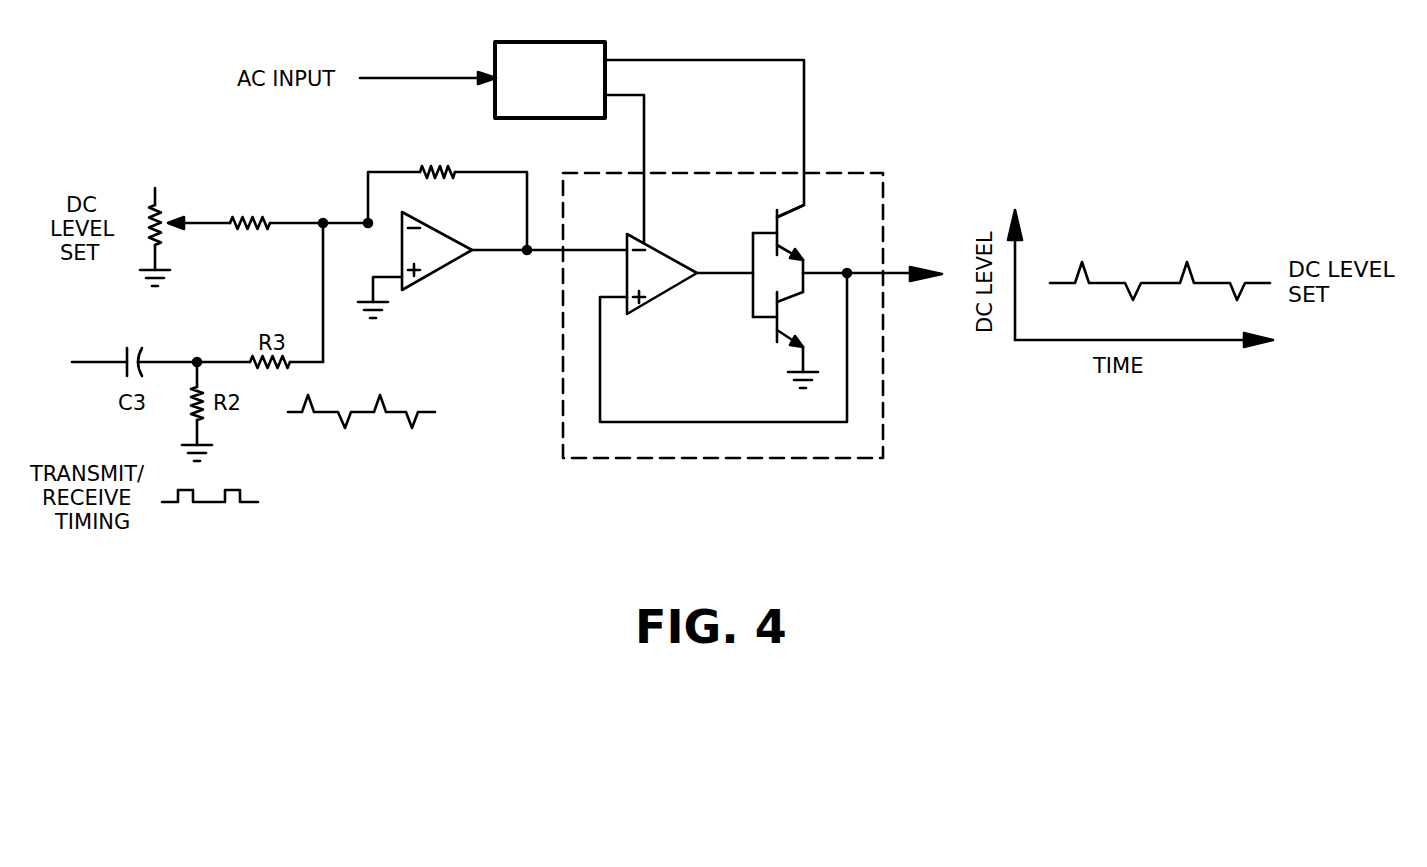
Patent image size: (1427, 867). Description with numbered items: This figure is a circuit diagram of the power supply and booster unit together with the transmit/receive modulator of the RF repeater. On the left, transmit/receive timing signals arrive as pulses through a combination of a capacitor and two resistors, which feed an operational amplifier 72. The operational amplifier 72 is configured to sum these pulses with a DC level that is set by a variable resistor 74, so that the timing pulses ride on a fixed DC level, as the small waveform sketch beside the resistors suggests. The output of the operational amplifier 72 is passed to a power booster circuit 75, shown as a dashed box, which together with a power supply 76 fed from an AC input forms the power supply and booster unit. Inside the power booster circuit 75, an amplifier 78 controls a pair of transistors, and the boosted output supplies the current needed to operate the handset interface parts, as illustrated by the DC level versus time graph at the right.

The operational amplifier 72 is at (446, 264).
The variable resistor 74 is at (164, 214).
The power booster circuit 75 is at (761, 334).
The power supply 76 is at (545, 42).
The amplifier 78 is at (662, 292).